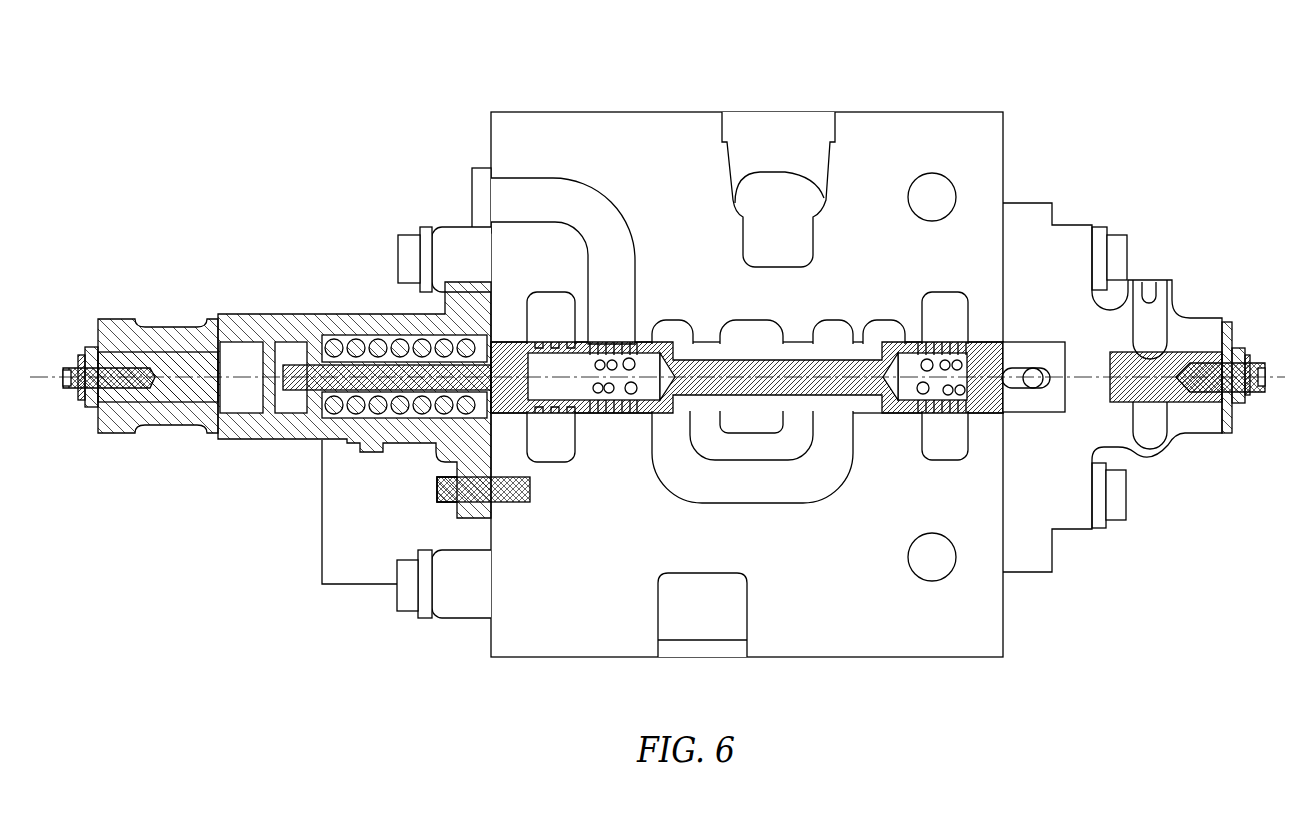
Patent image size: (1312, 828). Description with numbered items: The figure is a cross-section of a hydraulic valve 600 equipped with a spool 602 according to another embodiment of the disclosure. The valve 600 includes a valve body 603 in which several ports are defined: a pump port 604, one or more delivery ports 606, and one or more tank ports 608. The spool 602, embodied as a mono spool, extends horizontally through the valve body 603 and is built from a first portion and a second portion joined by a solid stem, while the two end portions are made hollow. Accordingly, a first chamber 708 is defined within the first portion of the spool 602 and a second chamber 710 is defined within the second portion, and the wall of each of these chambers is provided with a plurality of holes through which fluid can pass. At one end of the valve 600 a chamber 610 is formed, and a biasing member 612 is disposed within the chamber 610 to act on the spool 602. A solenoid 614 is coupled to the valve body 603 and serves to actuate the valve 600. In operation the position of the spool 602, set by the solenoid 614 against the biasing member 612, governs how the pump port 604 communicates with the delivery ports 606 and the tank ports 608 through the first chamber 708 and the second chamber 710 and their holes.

The hydraulic valve 600 is at (1212, 88).
The spool 602 is at (835, 367).
The valve body 603 is at (545, 643).
The pump port 604 is at (765, 330).
The delivery port 606 is at (537, 185).
The tank port 608 is at (535, 300).
The chamber 610 is at (283, 405).
The biasing member 612 is at (344, 340).
The solenoid 614 is at (398, 524).
The first chamber 708 is at (580, 390).
The second chamber 710 is at (908, 390).